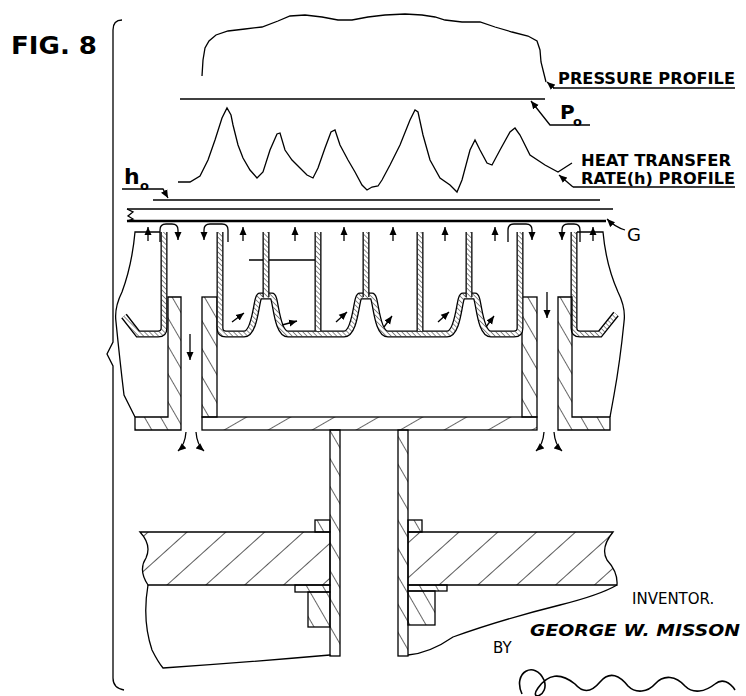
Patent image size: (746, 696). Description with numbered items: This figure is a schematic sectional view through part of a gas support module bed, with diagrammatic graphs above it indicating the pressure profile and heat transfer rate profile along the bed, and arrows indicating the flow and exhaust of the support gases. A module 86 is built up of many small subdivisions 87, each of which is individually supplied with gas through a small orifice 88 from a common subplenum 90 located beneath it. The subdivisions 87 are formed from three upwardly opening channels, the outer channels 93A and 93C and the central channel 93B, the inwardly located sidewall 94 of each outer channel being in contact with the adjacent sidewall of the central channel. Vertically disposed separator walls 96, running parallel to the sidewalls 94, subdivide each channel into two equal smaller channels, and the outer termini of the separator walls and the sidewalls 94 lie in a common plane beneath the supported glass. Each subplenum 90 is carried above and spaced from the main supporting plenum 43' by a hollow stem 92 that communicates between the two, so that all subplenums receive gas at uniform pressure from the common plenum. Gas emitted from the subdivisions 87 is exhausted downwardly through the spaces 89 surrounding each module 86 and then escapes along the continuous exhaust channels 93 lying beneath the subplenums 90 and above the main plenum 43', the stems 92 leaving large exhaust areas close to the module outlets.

The module 86 is at (470, 227).
The subdivision 87 is at (435, 234).
The orifice 88 is at (452, 330).
The space 89 is at (370, 337).
The subplenum 90 is at (370, 331).
The hollow stem 92 is at (330, 470).
The exhaust channel 93 is at (389, 549).
The outer channel 93A is at (235, 339).
The central channel 93B is at (408, 339).
The outer channel 93C is at (491, 339).
The sidewall 94 is at (216, 283).
The separator wall 96 is at (470, 256).
The main supporting plenum 43' is at (378, 586).